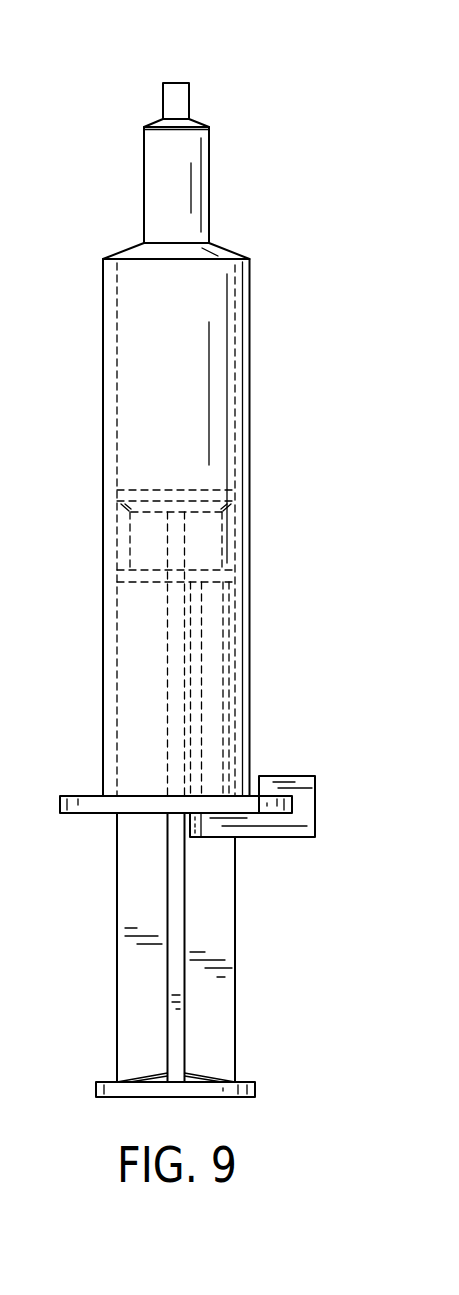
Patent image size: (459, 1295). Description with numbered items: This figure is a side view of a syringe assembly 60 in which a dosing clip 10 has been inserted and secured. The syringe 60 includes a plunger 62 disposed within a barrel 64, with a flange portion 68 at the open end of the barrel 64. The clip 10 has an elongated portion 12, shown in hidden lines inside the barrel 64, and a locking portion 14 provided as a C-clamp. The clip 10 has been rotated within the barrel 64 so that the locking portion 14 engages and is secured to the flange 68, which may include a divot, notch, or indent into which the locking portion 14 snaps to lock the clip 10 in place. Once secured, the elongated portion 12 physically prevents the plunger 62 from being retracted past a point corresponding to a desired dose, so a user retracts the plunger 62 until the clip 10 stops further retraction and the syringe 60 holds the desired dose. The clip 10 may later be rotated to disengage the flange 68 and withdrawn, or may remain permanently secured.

The syringe assembly 60 is at (262, 86).
The barrel 64 is at (245, 405).
The elongated portion 12 is at (212, 648).
The clip 10 is at (299, 764).
The locking portion 14 is at (336, 764).
The flange portion 68 is at (255, 805).
The plunger 62 is at (222, 1028).